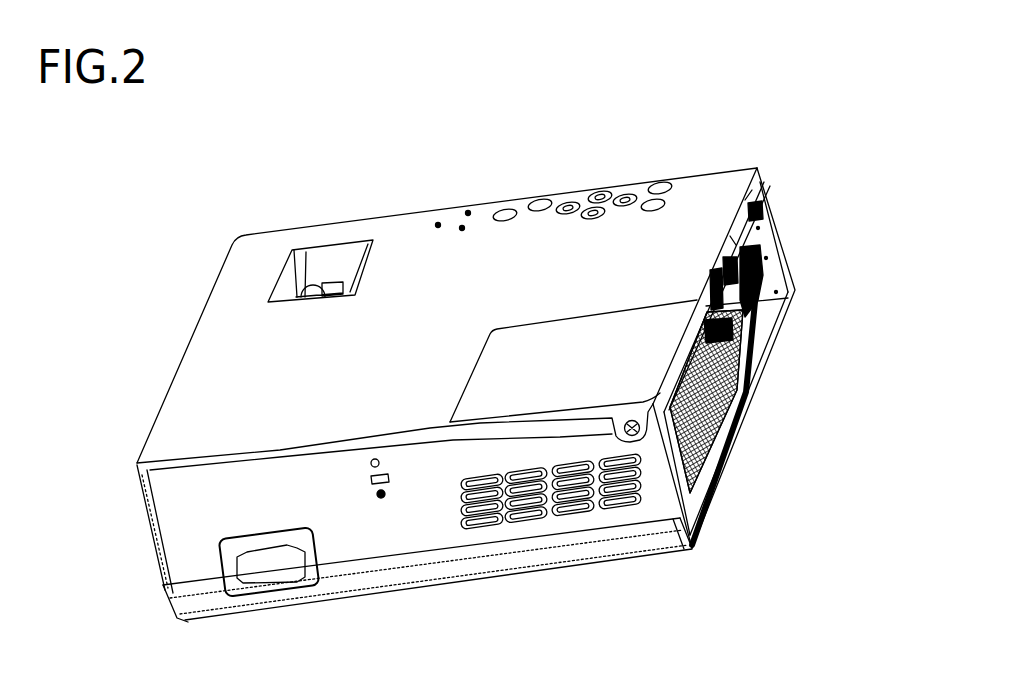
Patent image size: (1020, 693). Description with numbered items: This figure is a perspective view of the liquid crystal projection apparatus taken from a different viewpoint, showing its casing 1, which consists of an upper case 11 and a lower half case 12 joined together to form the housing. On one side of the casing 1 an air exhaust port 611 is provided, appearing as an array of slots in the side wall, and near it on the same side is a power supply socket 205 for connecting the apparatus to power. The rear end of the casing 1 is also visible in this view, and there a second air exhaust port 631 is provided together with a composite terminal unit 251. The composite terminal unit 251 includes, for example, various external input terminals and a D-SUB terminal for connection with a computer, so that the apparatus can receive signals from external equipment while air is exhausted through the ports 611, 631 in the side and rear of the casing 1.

The casing 1 is at (862, 180).
The upper case 11 is at (730, 193).
The lower half case 12 is at (797, 288).
The power supply socket 205 is at (237, 592).
The composite terminal unit 251 is at (741, 329).
The air exhaust port 611 is at (565, 517).
The air exhaust port 631 is at (720, 460).